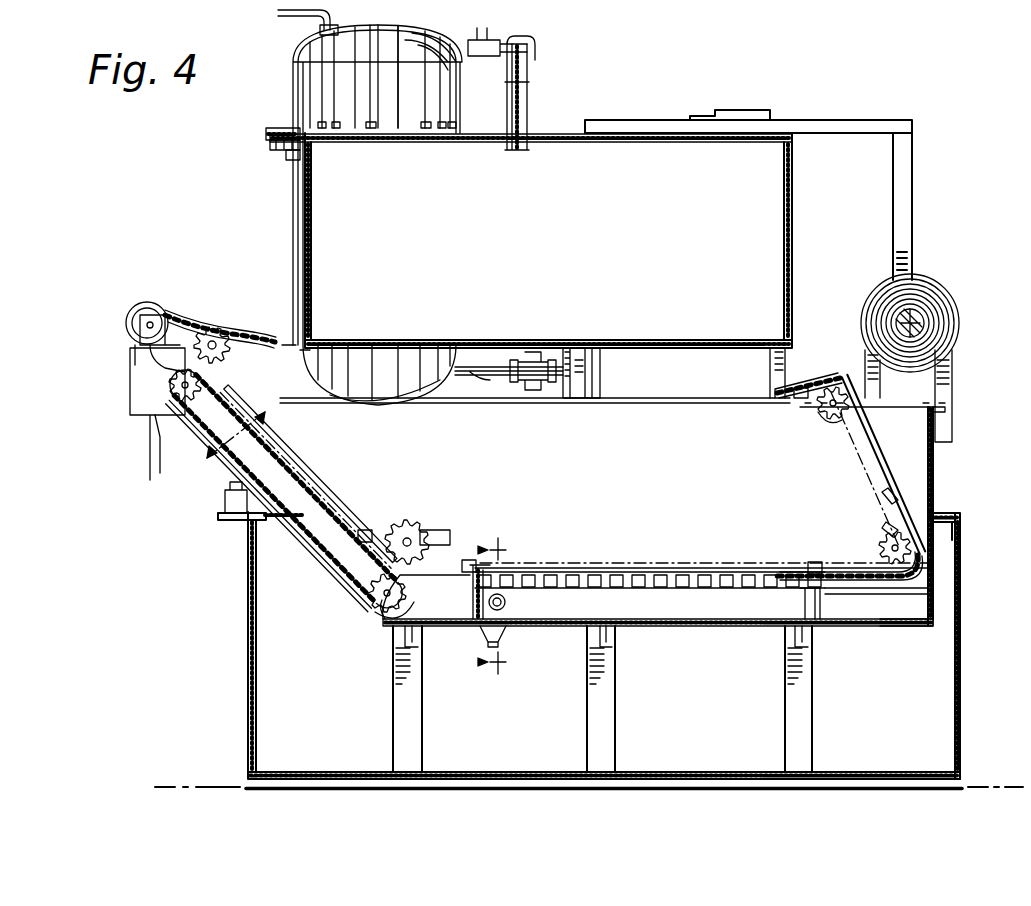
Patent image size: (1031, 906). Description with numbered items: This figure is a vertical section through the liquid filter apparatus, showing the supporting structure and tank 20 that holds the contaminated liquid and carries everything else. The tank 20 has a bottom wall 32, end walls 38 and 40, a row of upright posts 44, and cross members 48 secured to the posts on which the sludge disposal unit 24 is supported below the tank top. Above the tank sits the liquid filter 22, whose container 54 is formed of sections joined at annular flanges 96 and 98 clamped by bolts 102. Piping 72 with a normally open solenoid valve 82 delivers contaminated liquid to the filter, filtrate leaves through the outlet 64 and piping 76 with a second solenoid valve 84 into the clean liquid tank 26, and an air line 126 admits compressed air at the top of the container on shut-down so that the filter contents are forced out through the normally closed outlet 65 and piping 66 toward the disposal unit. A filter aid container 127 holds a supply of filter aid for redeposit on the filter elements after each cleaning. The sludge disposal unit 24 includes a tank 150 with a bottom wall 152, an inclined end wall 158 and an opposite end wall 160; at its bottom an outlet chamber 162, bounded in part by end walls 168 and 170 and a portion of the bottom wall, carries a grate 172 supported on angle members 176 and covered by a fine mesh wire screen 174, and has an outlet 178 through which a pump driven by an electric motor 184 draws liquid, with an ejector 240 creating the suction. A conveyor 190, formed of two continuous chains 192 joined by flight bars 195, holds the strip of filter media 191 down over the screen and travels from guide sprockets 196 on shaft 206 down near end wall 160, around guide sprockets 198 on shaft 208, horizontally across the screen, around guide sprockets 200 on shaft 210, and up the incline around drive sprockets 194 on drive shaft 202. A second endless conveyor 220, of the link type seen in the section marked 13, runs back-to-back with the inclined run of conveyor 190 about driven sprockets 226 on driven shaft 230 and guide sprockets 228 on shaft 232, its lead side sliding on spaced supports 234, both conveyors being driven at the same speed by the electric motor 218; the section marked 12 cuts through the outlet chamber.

The section line 12- 12 is at (493, 603).
The section line 13- 13 is at (239, 450).
The supporting structure and tank 20 is at (246, 622).
The liquid filter 22 is at (292, 94).
The sludge disposal unit 24 is at (936, 471).
The clean liquid tank 26 is at (770, 268).
The bottom wall 32 is at (660, 772).
The end wall 38 is at (248, 663).
The end wall 40 is at (960, 681).
The upright load supporting members or posts 44 is at (420, 728).
The cross members 48 is at (415, 644).
The container 54 is at (386, 104).
The outlet 64 is at (420, 46).
The normally closed outlet 65 is at (380, 405).
The piping 66 is at (582, 348).
The piping 72 is at (470, 362).
The piping 76 is at (528, 100).
The solenoid valve 82 is at (542, 352).
The solenoid valve 84 is at (494, 40).
The annular flange 96 is at (266, 132).
The annular flange 98 is at (270, 144).
The bolts 102 is at (286, 152).
The air line 126 is at (305, 18).
The filter aid container 127 is at (838, 140).
The tank 150 is at (960, 598).
The bottom wall 152 is at (888, 627).
The inclined end wall 158 is at (300, 540).
The end wall 160 is at (940, 456).
The outlet chamber 162 is at (698, 604).
The end wall 168 is at (470, 587).
The end wall 170 is at (832, 608).
The grate 172 is at (603, 588).
The fine mesh wire screen 174 is at (685, 570).
The angle members 176 is at (808, 596).
The outlet 178 is at (506, 603).
The electric motor 184 is at (238, 486).
The conveyor 190 is at (818, 385).
The strip of filter media 191 is at (160, 440).
The continuous chains 192 is at (886, 496).
The drive sprockets 194 is at (230, 336).
The flight bars 195 is at (365, 532).
The guide sprockets 196 is at (828, 420).
The guide sprockets 198 is at (886, 528).
The guide sprockets 200 is at (414, 527).
The drive shaft 202 is at (212, 332).
The shaft 206 is at (828, 408).
The shaft 208 is at (890, 548).
The shaft 210 is at (426, 540).
The electric motor 218 is at (150, 305).
The second endless conveyor 220 is at (406, 598).
The driven sprockets 226 is at (170, 382).
The guide sprockets 228 is at (376, 596).
The driven shaft 230 is at (176, 396).
The shaft 232 is at (383, 612).
The supports 234 is at (290, 478).
The ejector or aspirator 240 is at (486, 636).